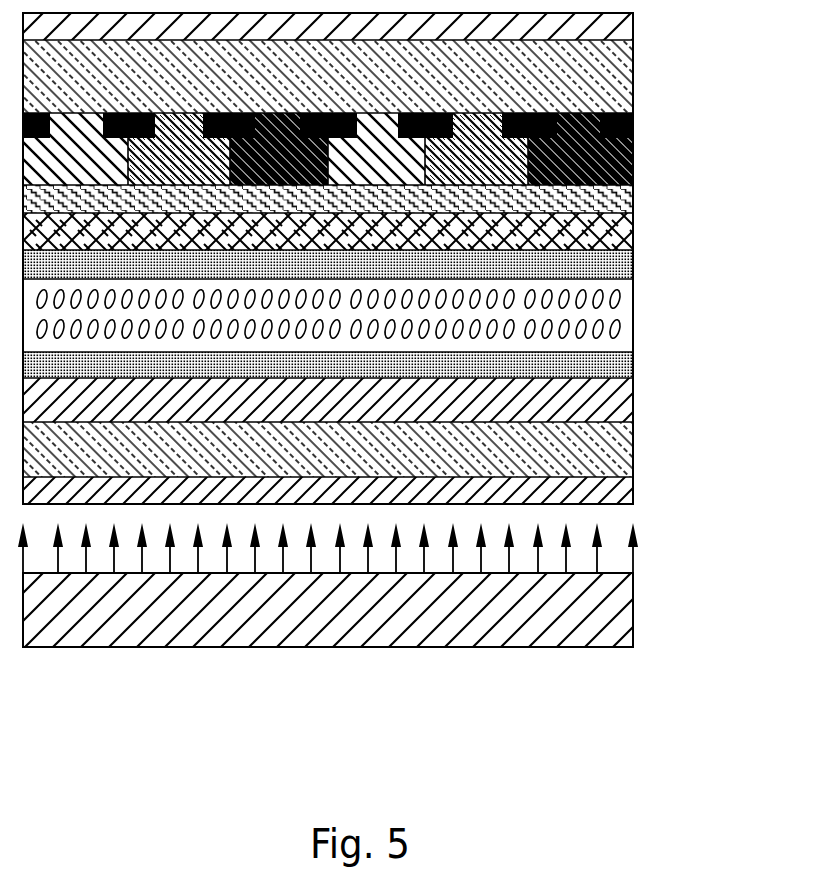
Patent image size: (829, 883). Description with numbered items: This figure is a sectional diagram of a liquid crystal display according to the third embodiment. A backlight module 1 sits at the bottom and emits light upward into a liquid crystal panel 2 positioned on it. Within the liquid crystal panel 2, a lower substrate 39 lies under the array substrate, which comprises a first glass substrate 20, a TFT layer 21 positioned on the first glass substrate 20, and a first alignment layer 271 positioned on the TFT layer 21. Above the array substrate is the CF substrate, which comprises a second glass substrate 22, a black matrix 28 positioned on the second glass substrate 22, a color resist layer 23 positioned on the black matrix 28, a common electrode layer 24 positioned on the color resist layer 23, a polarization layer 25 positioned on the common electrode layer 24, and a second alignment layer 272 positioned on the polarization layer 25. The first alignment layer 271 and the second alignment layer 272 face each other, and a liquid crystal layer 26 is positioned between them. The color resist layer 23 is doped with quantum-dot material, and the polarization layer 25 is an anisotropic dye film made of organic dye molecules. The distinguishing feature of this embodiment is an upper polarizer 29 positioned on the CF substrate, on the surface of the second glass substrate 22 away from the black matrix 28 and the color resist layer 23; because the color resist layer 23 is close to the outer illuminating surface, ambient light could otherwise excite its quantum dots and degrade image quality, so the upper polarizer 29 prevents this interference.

The backlight module 1 is at (592, 607).
The liquid crystal panel 2 is at (407, 267).
The first glass substrate 20 is at (580, 447).
The TFT layer 21 is at (583, 397).
The second glass substrate 22 is at (590, 70).
The color resist layer 23 is at (597, 167).
The common electrode layer 24 is at (590, 202).
The polarization layer 25 is at (585, 233).
The liquid crystal layer 26 is at (588, 310).
The black matrix 28 is at (633, 127).
The upper polarizer 29 is at (585, 21).
The lower substrate 39 is at (369, 499).
The first alignment layer 271 is at (585, 362).
The second alignment layer 272 is at (585, 262).